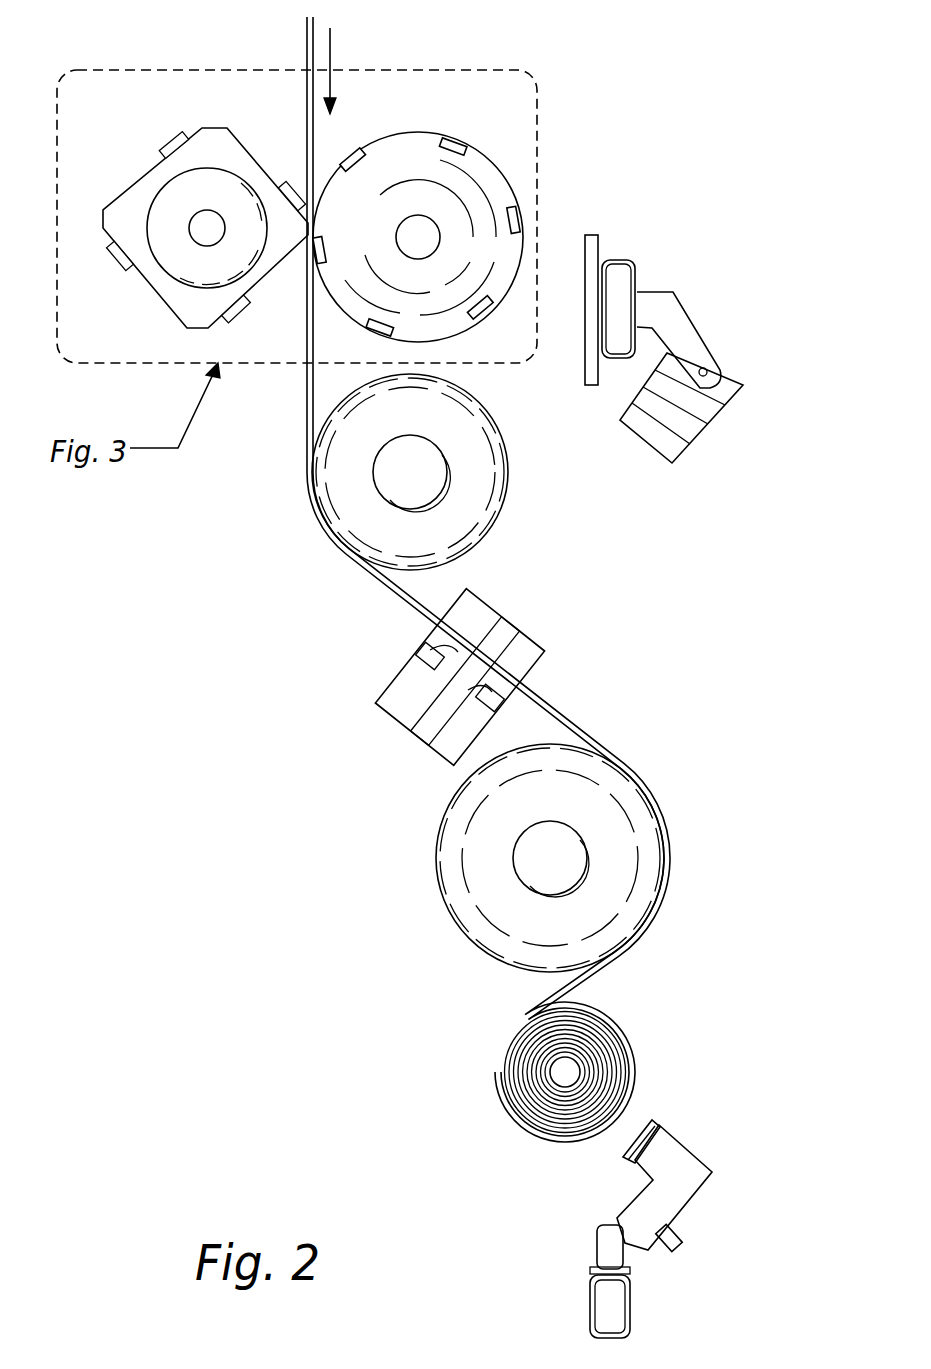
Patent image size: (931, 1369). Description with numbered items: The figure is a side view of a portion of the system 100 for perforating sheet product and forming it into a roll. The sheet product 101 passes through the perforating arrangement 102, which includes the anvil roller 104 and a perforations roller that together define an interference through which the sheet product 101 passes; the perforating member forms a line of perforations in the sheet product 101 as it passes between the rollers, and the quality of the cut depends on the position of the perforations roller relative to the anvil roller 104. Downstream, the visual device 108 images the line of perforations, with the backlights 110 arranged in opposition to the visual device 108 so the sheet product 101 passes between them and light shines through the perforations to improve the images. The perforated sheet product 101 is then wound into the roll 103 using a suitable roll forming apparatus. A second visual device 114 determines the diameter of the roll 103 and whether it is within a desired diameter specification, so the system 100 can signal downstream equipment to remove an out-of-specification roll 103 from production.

The system 100 is at (686, 166).
The sheet product 101 is at (307, 107).
The perforating arrangement 102 is at (172, 123).
The roll 103 is at (633, 1068).
The anvil roller 104 is at (418, 175).
The visual device 108 is at (198, 282).
The backlights 110 is at (437, 672).
The second visual device 114 is at (690, 1160).